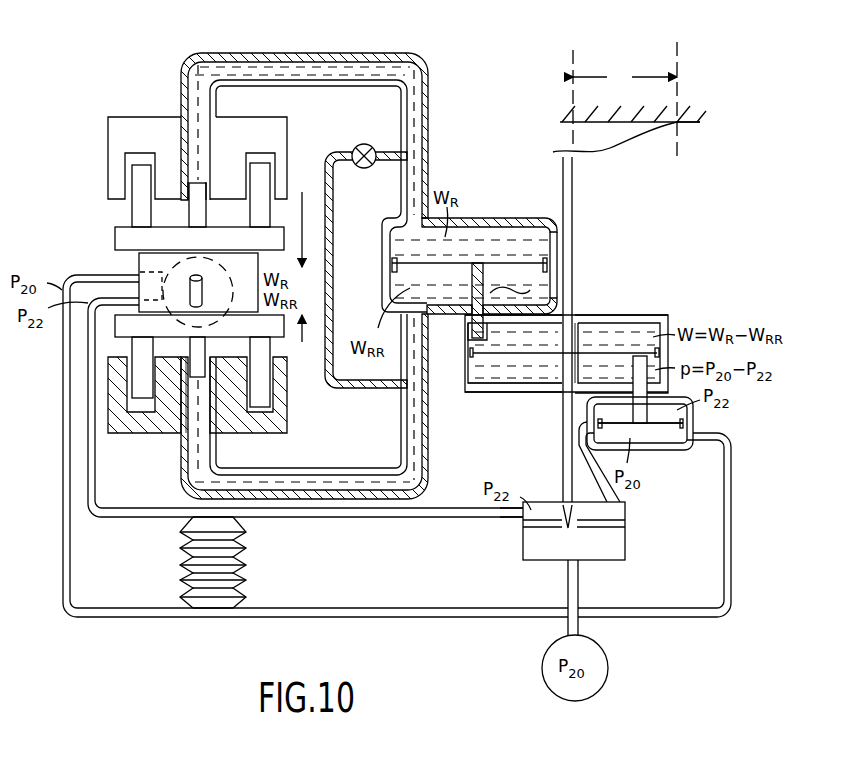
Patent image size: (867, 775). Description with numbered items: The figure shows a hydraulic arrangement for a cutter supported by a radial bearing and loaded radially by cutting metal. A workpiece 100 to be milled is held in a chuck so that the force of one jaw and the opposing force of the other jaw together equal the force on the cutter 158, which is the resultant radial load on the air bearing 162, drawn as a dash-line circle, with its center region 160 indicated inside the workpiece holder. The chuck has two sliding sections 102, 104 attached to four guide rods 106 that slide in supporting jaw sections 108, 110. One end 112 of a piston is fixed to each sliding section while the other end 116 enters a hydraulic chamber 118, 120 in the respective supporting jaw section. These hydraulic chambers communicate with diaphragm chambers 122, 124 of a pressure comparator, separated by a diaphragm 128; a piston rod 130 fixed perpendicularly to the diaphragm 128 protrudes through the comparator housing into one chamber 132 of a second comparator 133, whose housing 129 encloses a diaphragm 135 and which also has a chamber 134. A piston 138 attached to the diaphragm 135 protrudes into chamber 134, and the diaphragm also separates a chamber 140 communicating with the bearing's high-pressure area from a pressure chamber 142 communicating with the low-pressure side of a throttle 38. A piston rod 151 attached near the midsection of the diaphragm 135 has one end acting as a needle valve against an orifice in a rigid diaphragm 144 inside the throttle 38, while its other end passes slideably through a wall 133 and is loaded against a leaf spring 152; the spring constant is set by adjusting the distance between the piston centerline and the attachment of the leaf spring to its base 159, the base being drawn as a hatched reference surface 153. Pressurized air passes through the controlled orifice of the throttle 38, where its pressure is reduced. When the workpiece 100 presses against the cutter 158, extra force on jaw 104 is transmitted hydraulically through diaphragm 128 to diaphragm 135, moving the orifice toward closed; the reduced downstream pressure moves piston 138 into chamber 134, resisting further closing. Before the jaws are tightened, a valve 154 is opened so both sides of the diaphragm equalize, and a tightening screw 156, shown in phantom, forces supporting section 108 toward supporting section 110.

The throttle 38 is at (528, 548).
The workpiece 100 is at (237, 266).
The sliding section 102 is at (123, 330).
The sliding section 104 is at (115, 230).
The guide rods 106 is at (258, 177).
The supporting jaw section 108 is at (108, 422).
The supporting jaw section 110 is at (128, 125).
The piston end 112 is at (197, 221).
The piston end 116 is at (197, 186).
The hydraulic chamber 118 is at (198, 418).
The hydraulic chamber 120 is at (196, 78).
The diaphragm chamber 122 is at (537, 290).
The diaphragm chamber 124 is at (518, 230).
The diaphragm 128 is at (527, 260).
The second chamber 129 is at (660, 315).
The piston rod 130 is at (548, 300).
The chamber 132 is at (625, 337).
The second comparator 133 is at (610, 320).
The chamber 134 is at (502, 376).
The diaphragm 135 is at (483, 354).
The piston 138 is at (637, 413).
The chamber 140 is at (687, 437).
The pressure chamber 142 is at (683, 416).
The rigid diaphragm 144 is at (620, 530).
The piston rod 151 is at (562, 458).
The leaf spring 152 is at (628, 143).
The reference surface 153 is at (680, 124).
The valve 154 is at (362, 143).
The tightening screw 156 is at (238, 548).
The cutter 158 is at (190, 276).
The base 159 is at (658, 112).
The pivot circle 160 is at (180, 292).
The air bearing 162 is at (140, 277).